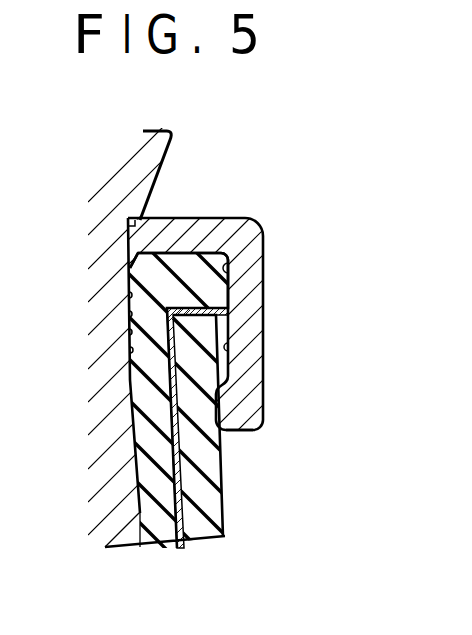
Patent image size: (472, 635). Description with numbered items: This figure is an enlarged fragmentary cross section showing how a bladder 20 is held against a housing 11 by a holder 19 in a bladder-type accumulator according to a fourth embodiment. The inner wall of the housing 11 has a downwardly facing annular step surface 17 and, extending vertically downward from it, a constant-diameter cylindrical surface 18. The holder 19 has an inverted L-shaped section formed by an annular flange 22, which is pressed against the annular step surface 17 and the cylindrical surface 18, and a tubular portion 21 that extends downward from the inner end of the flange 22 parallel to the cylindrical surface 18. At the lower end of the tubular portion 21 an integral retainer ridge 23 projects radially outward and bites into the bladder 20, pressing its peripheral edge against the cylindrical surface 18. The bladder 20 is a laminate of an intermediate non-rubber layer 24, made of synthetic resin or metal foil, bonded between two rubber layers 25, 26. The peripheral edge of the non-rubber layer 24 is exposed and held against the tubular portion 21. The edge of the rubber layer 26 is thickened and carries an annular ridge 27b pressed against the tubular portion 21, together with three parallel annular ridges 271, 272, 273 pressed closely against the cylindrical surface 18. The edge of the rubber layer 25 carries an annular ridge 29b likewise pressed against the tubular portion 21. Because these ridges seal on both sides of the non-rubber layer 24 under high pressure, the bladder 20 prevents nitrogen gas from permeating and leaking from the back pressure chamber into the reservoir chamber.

The housing 11 is at (125, 181).
The annular step surface 17 is at (126, 226).
The cylindrical surface 18 is at (150, 425).
The holder 19 is at (234, 321).
The bladder 20 is at (150, 425).
The tubular portion 21 is at (255, 343).
The annular flange 22 is at (194, 222).
The retainer ridge 23 is at (259, 426).
The non-rubber layer 24 is at (183, 535).
The rubber layer 25 is at (208, 528).
The rubber layer 26 is at (162, 520).
The annular ridge 271 is at (128, 284).
The annular ridge 272 is at (129, 327).
The annular ridge 273 is at (129, 368).
The annular ridge 27b is at (228, 272).
The annular ridge 29b is at (232, 348).